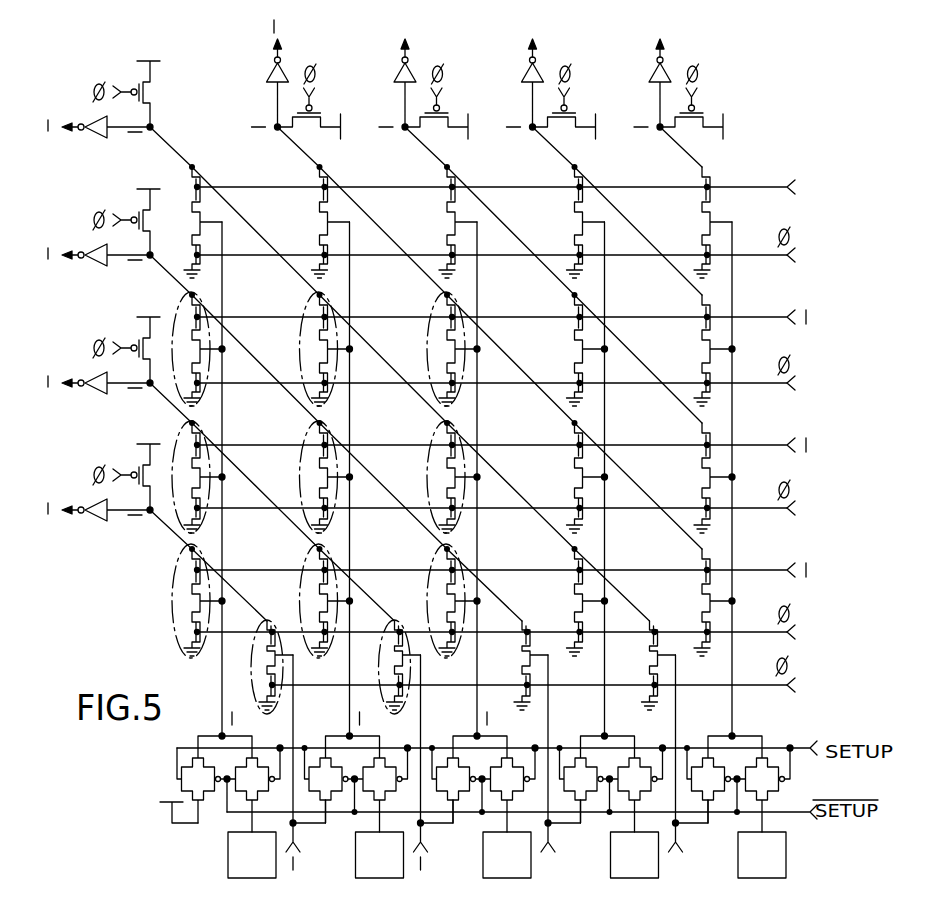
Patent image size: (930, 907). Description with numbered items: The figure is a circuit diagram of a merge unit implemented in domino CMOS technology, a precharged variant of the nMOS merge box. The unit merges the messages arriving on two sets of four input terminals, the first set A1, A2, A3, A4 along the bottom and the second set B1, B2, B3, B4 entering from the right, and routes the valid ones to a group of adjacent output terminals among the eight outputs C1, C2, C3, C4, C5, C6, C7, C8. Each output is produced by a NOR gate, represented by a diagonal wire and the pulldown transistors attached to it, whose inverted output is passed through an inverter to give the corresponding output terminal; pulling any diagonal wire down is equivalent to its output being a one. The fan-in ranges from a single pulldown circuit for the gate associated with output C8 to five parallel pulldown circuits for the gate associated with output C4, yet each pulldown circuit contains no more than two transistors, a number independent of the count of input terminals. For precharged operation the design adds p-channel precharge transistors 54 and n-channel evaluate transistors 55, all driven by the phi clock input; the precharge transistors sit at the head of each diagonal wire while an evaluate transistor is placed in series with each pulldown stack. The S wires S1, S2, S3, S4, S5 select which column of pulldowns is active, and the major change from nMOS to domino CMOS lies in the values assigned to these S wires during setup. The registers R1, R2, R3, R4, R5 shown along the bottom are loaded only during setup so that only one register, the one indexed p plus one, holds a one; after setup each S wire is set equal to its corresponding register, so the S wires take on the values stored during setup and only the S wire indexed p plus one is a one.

The p-channel precharge transistor 54 is at (152, 217).
The n-channel evaluate transistor 55 is at (313, 248).
The input terminal B4 is at (504, 178).
The input terminal B3 is at (501, 305).
The input terminal B2 is at (501, 433).
The input terminal B1 is at (501, 558).
The output terminal C1 is at (100, 523).
The output terminal C2 is at (100, 396).
The output terminal C3 is at (100, 268).
The output terminal C4 is at (100, 140).
The output terminal C5 is at (296, 88).
The output terminal C6 is at (423, 85).
The output terminal C7 is at (551, 85).
The output terminal C8 is at (678, 85).
The S wire S1 is at (221, 767).
The S wire S2 is at (358, 767).
The S wire S3 is at (485, 767).
The S wire S4 is at (613, 767).
The S wire S5 is at (740, 767).
The register R1 is at (252, 855).
The register R2 is at (380, 855).
The register R3 is at (507, 855).
The register R4 is at (635, 855).
The register R5 is at (762, 855).
The input terminal A1 is at (308, 762).
The input terminal A2 is at (436, 762).
The input terminal A3 is at (563, 765).
The input terminal A4 is at (691, 765).